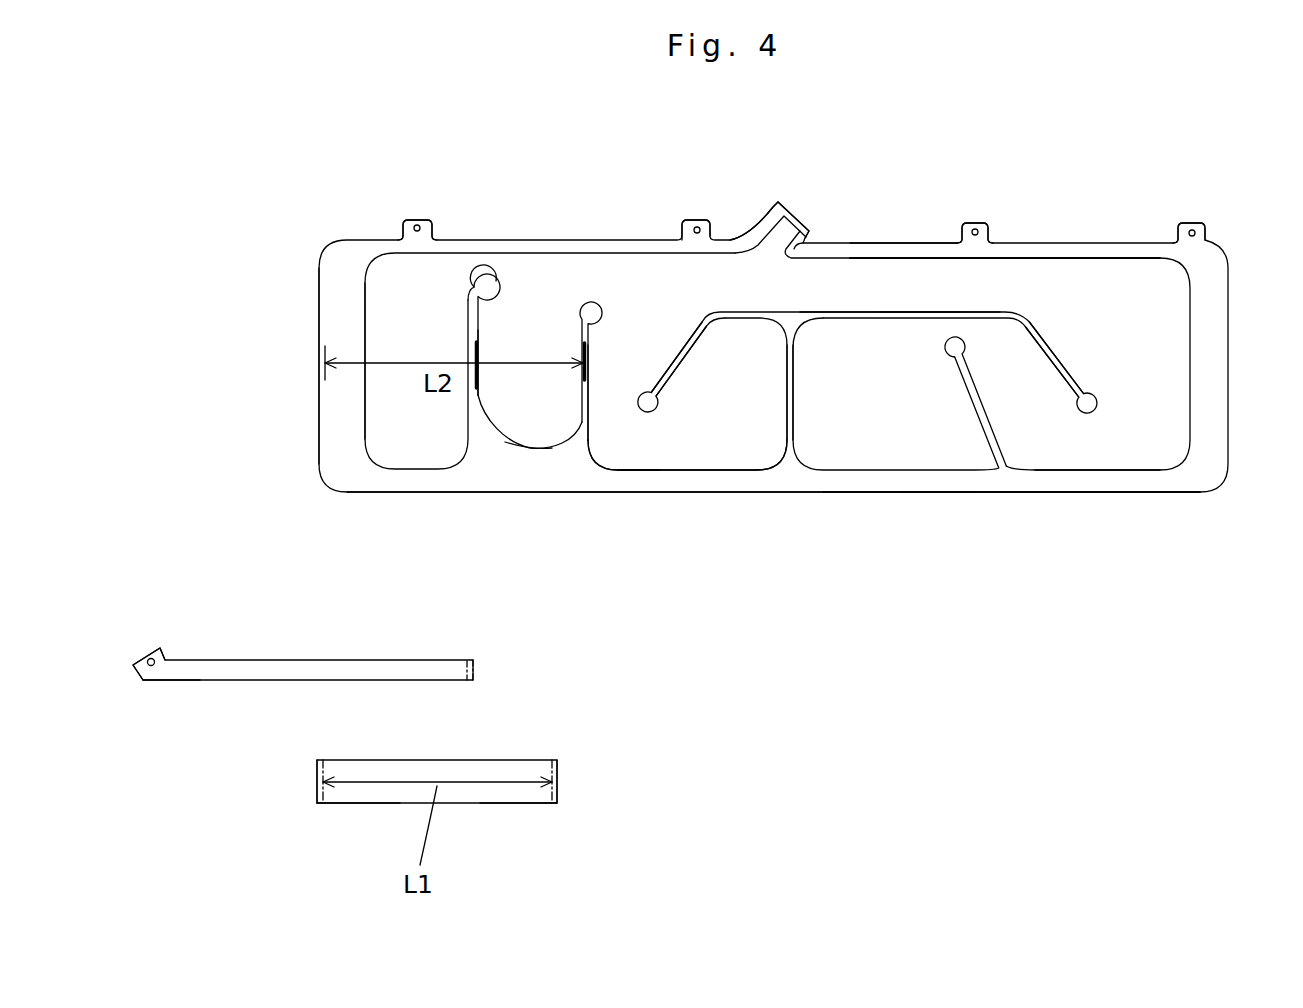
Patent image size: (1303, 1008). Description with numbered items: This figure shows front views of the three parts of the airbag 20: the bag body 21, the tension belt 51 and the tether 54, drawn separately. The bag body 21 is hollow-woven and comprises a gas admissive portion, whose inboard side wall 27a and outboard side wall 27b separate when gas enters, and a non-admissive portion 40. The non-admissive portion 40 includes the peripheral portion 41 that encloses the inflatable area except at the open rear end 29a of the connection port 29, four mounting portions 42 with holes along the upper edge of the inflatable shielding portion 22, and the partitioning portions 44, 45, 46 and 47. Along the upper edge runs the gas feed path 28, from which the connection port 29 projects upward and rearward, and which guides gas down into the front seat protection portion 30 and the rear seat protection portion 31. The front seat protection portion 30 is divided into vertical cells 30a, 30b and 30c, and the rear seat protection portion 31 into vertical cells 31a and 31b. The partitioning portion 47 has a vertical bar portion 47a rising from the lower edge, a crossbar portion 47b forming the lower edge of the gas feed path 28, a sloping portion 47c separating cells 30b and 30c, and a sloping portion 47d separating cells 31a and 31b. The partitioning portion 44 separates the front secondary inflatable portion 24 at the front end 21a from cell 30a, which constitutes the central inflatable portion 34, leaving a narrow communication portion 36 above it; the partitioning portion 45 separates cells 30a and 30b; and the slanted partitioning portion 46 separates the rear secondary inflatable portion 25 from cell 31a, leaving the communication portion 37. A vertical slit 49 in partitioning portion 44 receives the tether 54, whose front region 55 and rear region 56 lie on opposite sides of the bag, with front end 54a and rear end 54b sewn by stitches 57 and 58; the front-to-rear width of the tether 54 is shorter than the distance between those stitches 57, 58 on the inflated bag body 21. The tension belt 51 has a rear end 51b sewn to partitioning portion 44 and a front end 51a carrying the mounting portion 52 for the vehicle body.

The airbag 20 is at (1148, 687).
The bag body 21 is at (1151, 205).
The front end of bag body 21a is at (340, 465).
The inflatable shielding portion 22 is at (1034, 497).
The front secondary inflatable portion 24 is at (409, 472).
The rear secondary inflatable portion 25 is at (896, 477).
The inboard side wall 27a is at (620, 458).
The outboard side wall 27b is at (645, 458).
The gas feed path 28 is at (882, 268).
The connection port 29 is at (762, 242).
The rear end of connection port 29a is at (797, 217).
The front seat protection portion 30 is at (730, 473).
The vertical cell 30a is at (540, 432).
The vertical cell 30b is at (652, 350).
The vertical cell 30c is at (750, 400).
The rear seat protection portion 31 is at (1125, 477).
The vertical cell 31a is at (1026, 412).
The vertical cell 31b is at (1173, 350).
The central inflatable portion 34 is at (528, 445).
The communication portion 36 is at (490, 264).
The communication portion 37 is at (940, 332).
The non-admissive portion 40 is at (696, 230).
The peripheral portion 41 is at (1079, 245).
The mounting portions 42 is at (417, 218).
The partitioning portion 44 is at (470, 337).
The partitioning portion 45 is at (582, 337).
The partitioning portion 46 is at (975, 383).
The partitioning portion 47 is at (809, 434).
The vertical bar portion 47a is at (792, 410).
The crossbar portion 47b is at (873, 317).
The sloping portion 47c is at (678, 357).
The sloping portion 47d is at (1072, 363).
The slit 49 is at (487, 423).
The tension belt 51 is at (279, 657).
The front end of tension belt 51a is at (176, 681).
The rear end of tension belt 51b is at (473, 672).
The mounting portion 52 is at (153, 647).
The tether 54 is at (530, 750).
The front end of tether 54a is at (317, 770).
The rear end of tether 54b is at (557, 770).
The front region of tether 55 is at (356, 808).
The rear region of tether 56 is at (527, 808).
The stitches 57 is at (323, 379).
The stitches 58 is at (590, 373).